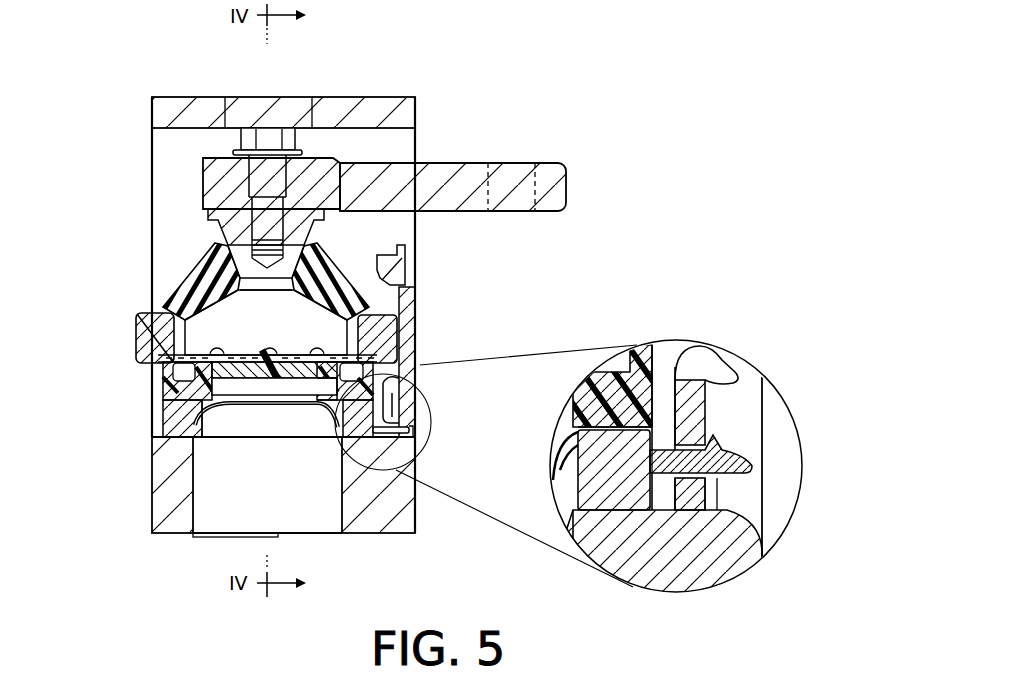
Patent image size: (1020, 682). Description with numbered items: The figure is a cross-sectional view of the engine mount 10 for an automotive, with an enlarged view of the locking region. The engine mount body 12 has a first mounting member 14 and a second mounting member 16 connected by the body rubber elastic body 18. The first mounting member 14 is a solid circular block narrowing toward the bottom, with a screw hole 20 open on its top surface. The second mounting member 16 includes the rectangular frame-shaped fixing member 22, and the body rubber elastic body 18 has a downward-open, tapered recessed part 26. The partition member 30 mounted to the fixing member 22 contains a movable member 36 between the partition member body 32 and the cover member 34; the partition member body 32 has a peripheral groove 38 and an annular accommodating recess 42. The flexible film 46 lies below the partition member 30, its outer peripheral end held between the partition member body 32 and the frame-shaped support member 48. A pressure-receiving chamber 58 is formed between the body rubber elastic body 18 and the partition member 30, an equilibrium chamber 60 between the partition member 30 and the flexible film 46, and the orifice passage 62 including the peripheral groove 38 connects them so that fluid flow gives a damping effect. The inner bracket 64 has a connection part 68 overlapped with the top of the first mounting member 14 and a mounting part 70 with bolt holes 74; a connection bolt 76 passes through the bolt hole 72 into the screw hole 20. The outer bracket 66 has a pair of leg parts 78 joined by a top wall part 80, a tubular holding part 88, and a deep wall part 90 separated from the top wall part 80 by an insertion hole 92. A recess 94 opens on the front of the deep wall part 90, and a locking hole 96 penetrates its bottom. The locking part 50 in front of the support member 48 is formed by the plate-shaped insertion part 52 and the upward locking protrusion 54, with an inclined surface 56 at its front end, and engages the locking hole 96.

The engine mount 10 is at (462, 75).
The engine mount body 12 is at (261, 304).
The first mounting member 14 is at (217, 240).
The second mounting member 16 is at (332, 449).
The body rubber elastic body 18 is at (323, 262).
The screw hole 20 is at (267, 138).
The fixing member 22 is at (134, 348).
The recessed part 26 is at (308, 310).
The partition member 30 is at (297, 385).
The partition member body 32 is at (270, 372).
The cover member 34 is at (203, 357).
The movable member 36 is at (270, 344).
The peripheral groove 38 is at (190, 375).
The accommodating recess 42 is at (322, 375).
The flexible film 46 is at (313, 417).
The support member 48 is at (162, 422).
The locking part 50 is at (410, 432).
The insertion part 52 is at (667, 463).
The locking protrusion 54 is at (756, 436).
The inclined surface 56 is at (742, 455).
The pressure-receiving chamber 58 is at (274, 335).
The equilibrium chamber 60 is at (218, 408).
The orifice passage 62 is at (350, 367).
The inner bracket 64 is at (384, 130).
The outer bracket 66 is at (152, 150).
The connection part 68 is at (220, 173).
The mounting part 70 is at (384, 130).
The bolt hole 72 is at (266, 129).
The bolt holes 74 is at (533, 185).
The connection bolt 76 is at (272, 205).
The leg parts 78 is at (170, 272).
The top wall part 80 is at (392, 116).
The holding part 88 is at (352, 518).
The deep wall part 90 is at (408, 347).
The insertion hole 92 is at (397, 254).
The recess 94 is at (402, 397).
The locking hole 96 is at (395, 422).